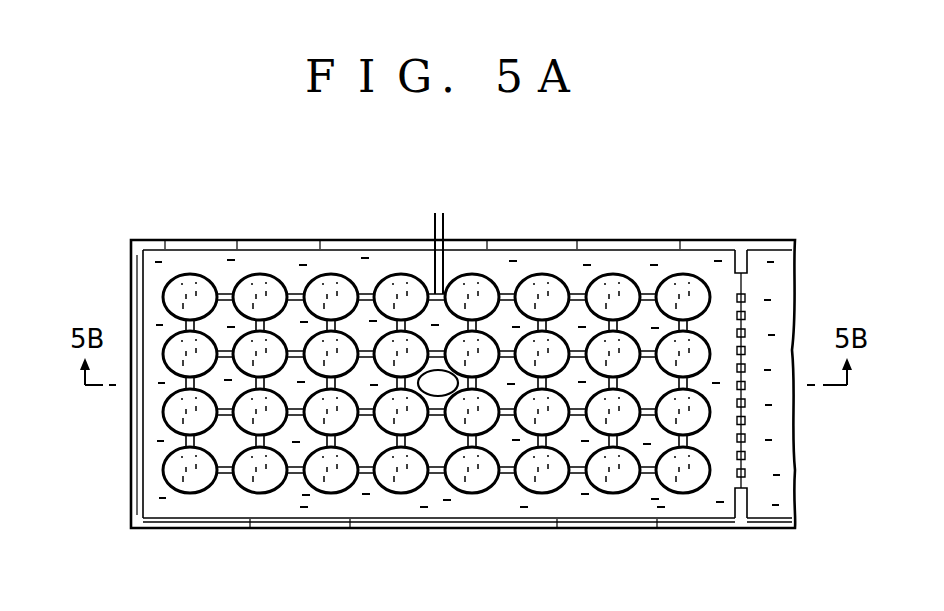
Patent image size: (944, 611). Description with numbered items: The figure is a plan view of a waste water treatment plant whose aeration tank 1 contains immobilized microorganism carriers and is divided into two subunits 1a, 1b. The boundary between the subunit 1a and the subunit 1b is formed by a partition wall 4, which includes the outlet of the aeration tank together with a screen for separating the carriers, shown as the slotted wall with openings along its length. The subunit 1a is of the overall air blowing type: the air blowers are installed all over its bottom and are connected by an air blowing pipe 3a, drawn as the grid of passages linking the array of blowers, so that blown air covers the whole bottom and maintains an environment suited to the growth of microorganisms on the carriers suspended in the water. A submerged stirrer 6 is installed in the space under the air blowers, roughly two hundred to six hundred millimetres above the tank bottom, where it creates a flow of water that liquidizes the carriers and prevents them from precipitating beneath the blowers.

The aeration tank 1 is at (139, 312).
The subunit 1a is at (640, 529).
The subunit 1b is at (768, 523).
The air blowing pipe 3a is at (505, 294).
The partition wall 4 is at (746, 318).
The submerged stirrer 6 is at (438, 392).